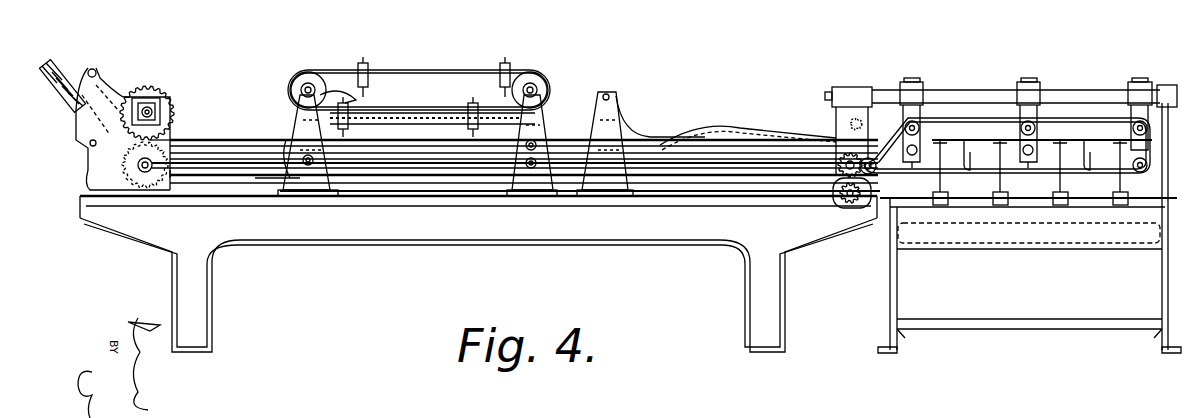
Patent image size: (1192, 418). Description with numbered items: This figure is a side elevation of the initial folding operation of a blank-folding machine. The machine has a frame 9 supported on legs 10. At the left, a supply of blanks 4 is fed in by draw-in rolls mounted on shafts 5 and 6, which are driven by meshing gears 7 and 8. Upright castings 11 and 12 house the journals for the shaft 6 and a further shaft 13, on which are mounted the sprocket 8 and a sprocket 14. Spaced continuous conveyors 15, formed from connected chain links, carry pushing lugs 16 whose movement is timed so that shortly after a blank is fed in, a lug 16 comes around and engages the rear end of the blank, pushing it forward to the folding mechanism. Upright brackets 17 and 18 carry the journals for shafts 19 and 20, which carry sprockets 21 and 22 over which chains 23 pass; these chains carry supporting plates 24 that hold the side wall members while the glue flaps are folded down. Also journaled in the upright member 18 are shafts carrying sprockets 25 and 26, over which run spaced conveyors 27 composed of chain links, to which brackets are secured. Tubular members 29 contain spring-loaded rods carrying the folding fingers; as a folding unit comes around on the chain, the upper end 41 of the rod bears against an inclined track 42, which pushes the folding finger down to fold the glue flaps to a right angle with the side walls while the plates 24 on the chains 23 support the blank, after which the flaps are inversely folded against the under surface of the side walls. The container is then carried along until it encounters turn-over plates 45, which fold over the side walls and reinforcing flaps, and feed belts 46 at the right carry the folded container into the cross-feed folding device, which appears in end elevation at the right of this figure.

The supply of blanks 4 is at (77, 95).
The shaft 5 is at (145, 100).
The shaft 6 is at (152, 165).
The gear 7 is at (165, 90).
The gear 8 is at (172, 173).
The frame 9 is at (290, 230).
The supporting legs 10 is at (210, 300).
The upright casting 11 is at (168, 140).
The upright casting 12 is at (840, 122).
The shaft 13 is at (840, 186).
The sprocket 14 is at (832, 172).
The continuous conveyors 15 is at (245, 140).
The pushing lugs 16 is at (292, 130).
The upright bracket 17 is at (292, 152).
The upright bracket 18 is at (548, 119).
The shaft 19 is at (326, 158).
The shaft 20 is at (516, 165).
The sprocket 21 is at (292, 175).
The sprocket 22 is at (480, 168).
The chains 23 is at (317, 92).
The supporting plates 24 is at (546, 78).
The sprocket 25 is at (304, 90).
The sprocket 26 is at (560, 100).
The spaced conveyors 27 is at (418, 72).
The tubular members 29 is at (372, 66).
The upper end of the rod 41 is at (346, 118).
The inclined track 42 is at (345, 100).
The turn-over plates 45 is at (714, 140).
The feed belts 46 is at (926, 135).